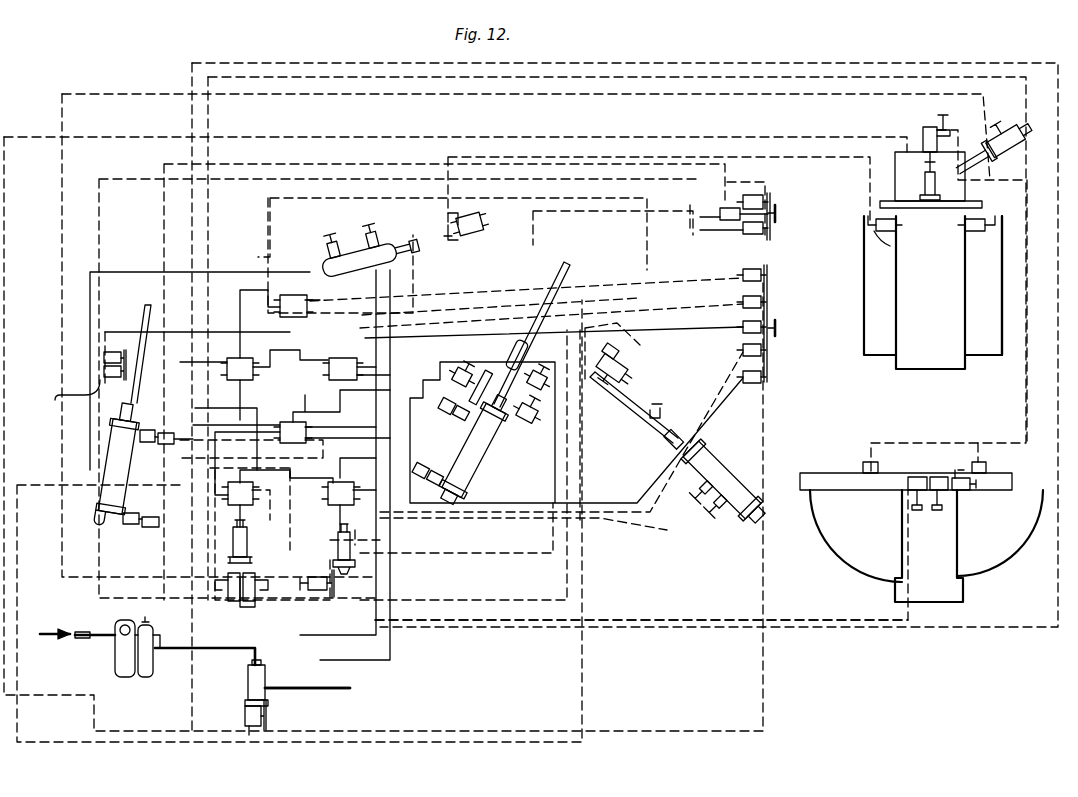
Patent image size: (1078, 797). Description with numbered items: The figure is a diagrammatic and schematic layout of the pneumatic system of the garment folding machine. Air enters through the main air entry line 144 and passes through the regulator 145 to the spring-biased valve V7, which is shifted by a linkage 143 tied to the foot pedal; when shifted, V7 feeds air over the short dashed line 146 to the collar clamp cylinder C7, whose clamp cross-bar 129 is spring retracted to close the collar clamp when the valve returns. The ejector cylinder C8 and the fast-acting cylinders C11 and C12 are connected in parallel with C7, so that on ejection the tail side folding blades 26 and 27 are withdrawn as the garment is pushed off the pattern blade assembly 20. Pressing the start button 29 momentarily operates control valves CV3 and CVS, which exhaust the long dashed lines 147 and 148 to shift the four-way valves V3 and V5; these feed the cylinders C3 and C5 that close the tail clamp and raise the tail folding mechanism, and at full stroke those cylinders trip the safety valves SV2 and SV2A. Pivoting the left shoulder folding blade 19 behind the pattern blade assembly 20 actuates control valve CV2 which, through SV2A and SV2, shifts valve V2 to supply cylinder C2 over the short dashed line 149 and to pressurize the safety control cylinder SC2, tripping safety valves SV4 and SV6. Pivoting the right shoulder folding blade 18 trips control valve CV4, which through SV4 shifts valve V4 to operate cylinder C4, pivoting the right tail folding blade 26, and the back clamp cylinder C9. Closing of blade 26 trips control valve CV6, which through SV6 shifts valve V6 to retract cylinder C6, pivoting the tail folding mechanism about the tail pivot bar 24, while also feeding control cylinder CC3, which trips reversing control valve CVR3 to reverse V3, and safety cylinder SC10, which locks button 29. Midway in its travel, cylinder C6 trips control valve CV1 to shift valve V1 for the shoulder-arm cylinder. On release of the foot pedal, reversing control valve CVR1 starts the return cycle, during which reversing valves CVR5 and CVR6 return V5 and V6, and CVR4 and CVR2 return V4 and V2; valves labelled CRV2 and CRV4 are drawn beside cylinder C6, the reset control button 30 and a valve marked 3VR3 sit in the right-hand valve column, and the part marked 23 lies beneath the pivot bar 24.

The short dashed line 146 is at (100, 700).
The air line 147 is at (730, 207).
The air line 148 is at (695, 222).
The short dashed line 149 is at (660, 610).
The linkage 143 is at (340, 690).
The main air entry line 144 is at (60, 630).
The regulator 145 is at (135, 676).
The clamp cross-bar 129 is at (978, 203).
The start button 29 is at (780, 212).
The reset control button 30 is at (780, 328).
The left side and shoulder folding blade 19 is at (862, 345).
The pattern blade assembly 20 is at (930, 375).
The right shoulder folding blade 18 is at (987, 375).
The bowl center post 23 is at (955, 600).
The tail pivot bar 24 is at (810, 480).
The right tail folding blade 26 is at (1000, 555).
The tail side folding blade 27 is at (855, 560).
The cylinder C2 is at (130, 482).
The cylinder C3 is at (712, 488).
The cylinder C4 is at (938, 475).
The cylinder C5 is at (356, 248).
The cylinder C6 is at (462, 468).
The collar clamp cylinder C7 is at (924, 192).
The ejector cylinder C8 is at (923, 130).
The back clamp cylinder C9 is at (1020, 152).
The fast acting cylinder C11 is at (988, 468).
The fast acting cylinder C12 is at (862, 467).
The control valve CV1 is at (460, 368).
The control valve CV2 is at (892, 232).
The control valve CV3 is at (768, 195).
The control valve CV4 is at (972, 231).
The control valve CV6 is at (965, 492).
The control valve CVS is at (748, 236).
The reversing control valve CVR1 is at (270, 712).
The reverse control valve CVR2 is at (764, 314).
The reversing control valve CVR3 is at (339, 583).
The reverse control valve CVR4 is at (762, 352).
The reversing control valve CVR5 is at (55, 403).
The reversing control valve CVR6 is at (112, 350).
The control relief valve CRV2 is at (543, 368).
The control relief valve CRV4 is at (525, 428).
The three-way valve 3VR3 is at (760, 380).
The safety valve SV2 is at (620, 360).
The safety valve SV2A is at (478, 231).
The safety valve SV4 is at (232, 578).
The safety valve SV6 is at (262, 572).
The safety control cylinder SC2 is at (232, 543).
The safety cylinder SC10 is at (758, 195).
The control cylinder CC3 is at (337, 545).
The four-way valve V1 is at (293, 432).
The four-way valve V2 is at (240, 493).
The four-way valve V3 is at (341, 493).
The four-way valve V4 is at (240, 369).
The four-way valve V5 is at (293, 306).
The control valve V6 is at (343, 369).
The valve V7 is at (266, 676).